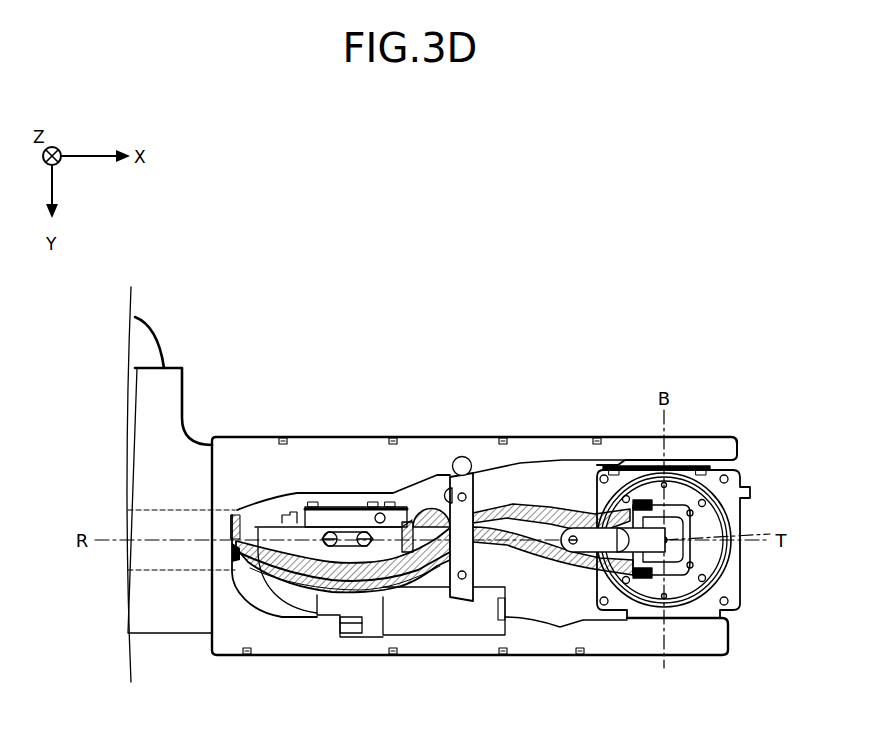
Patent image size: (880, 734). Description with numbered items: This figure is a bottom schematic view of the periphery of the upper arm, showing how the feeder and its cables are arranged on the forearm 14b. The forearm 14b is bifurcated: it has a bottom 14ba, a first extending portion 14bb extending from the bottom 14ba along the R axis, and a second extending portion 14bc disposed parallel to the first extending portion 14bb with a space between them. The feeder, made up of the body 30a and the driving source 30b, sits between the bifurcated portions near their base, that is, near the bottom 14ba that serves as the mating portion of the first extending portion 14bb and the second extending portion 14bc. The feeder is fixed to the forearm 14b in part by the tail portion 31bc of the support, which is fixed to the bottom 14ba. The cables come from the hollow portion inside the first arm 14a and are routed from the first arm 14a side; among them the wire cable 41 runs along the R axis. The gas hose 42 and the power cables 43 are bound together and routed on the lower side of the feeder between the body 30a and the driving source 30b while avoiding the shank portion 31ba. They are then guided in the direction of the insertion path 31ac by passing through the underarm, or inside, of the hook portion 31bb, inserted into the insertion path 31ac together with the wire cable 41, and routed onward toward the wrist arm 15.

The first arm 14a is at (182, 622).
The forearm 14b is at (235, 422).
The bottom 14ba is at (255, 512).
The first extending portion 14bb is at (546, 445).
The second extending portion 14bc is at (546, 648).
The wrist arm 15 is at (758, 616).
The body 30a is at (348, 520).
The driving source 30b is at (425, 619).
The insertion path 31ac is at (483, 492).
The shank portion 31ba is at (300, 530).
The hook portion 31bb is at (441, 513).
The tail portion 31bc is at (256, 588).
The wire cable 41 is at (561, 535).
The gas hose 42 is at (330, 598).
The power cables 43 is at (362, 583).